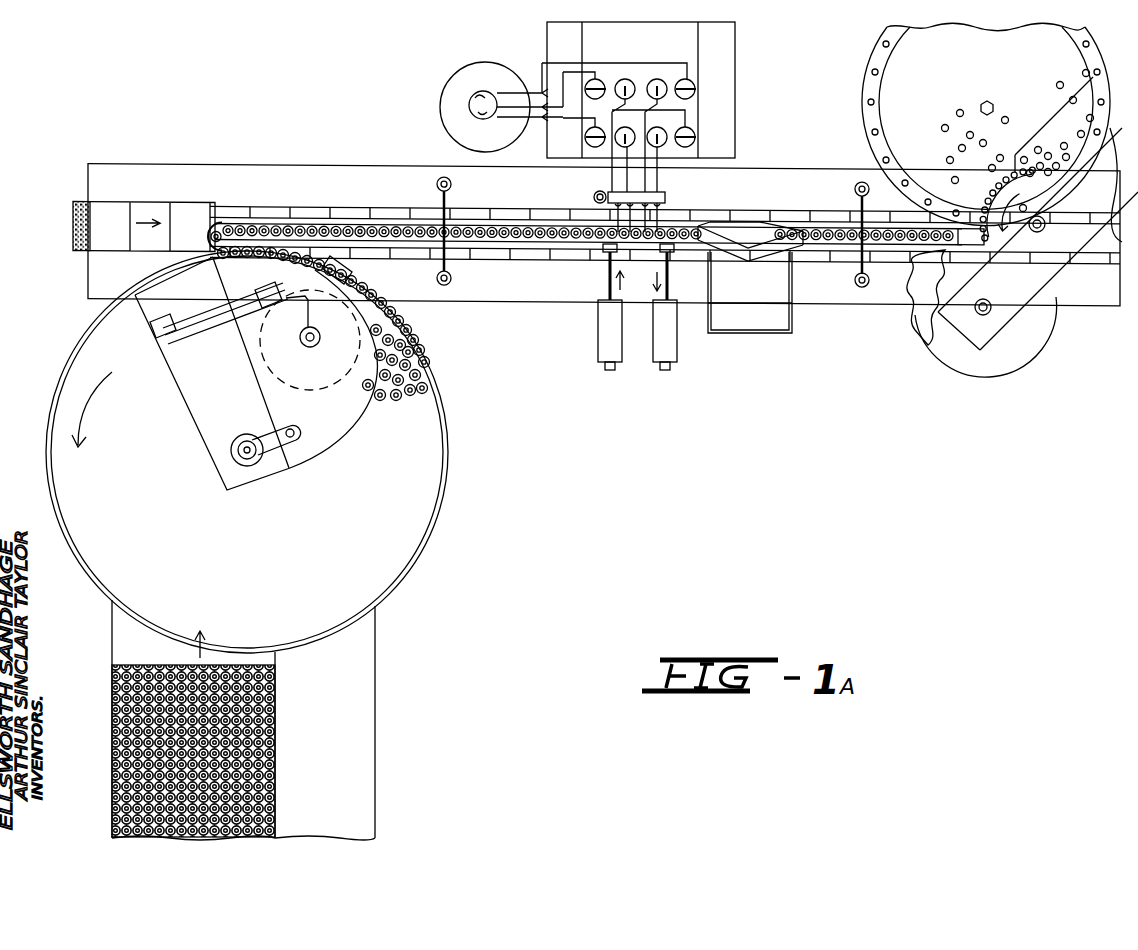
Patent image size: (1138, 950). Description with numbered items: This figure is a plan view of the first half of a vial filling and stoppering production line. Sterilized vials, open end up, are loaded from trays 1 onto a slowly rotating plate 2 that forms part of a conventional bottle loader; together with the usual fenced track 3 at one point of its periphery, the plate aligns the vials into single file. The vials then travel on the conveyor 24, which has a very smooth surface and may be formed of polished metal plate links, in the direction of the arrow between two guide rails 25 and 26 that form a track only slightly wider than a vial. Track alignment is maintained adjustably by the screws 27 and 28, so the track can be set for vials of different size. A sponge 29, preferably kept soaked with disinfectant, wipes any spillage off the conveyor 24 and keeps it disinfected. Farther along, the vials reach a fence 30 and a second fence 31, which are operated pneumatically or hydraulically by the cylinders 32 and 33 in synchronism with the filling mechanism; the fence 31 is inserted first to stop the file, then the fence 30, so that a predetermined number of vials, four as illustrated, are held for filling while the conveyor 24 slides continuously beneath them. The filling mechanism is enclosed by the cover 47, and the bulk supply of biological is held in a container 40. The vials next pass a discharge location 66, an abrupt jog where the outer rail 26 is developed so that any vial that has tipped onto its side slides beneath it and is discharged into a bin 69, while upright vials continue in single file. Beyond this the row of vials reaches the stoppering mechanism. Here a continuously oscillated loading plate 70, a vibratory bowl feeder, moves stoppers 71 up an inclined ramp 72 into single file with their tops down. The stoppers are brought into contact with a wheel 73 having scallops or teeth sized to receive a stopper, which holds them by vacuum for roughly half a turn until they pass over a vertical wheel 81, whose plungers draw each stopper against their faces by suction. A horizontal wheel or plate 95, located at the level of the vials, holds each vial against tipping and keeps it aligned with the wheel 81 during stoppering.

The trays 1 is at (275, 688).
The rotating plate 2 is at (247, 535).
The fenced track 3 is at (430, 365).
The conveyor 24 is at (158, 212).
The guide rail 25 is at (386, 222).
The guide rail 26 is at (410, 248).
The screw 27 is at (441, 176).
The screw 28 is at (448, 284).
The sponge 29 is at (73, 213).
The fence 30 is at (606, 240).
The second fence 31 is at (672, 240).
The cylinder 32 is at (598, 340).
The cylinder 33 is at (677, 342).
The container 40 is at (445, 90).
The cover 47 is at (547, 40).
The discharge location 66 is at (754, 248).
The bin 69 is at (770, 330).
The loading plate 70 is at (961, 124).
The stoppers 71 is at (945, 124).
The inclined ramp 72 is at (870, 101).
The wheel 73 is at (1045, 205).
The vertical wheel 81 is at (986, 318).
The wheel or plate 95 is at (920, 322).